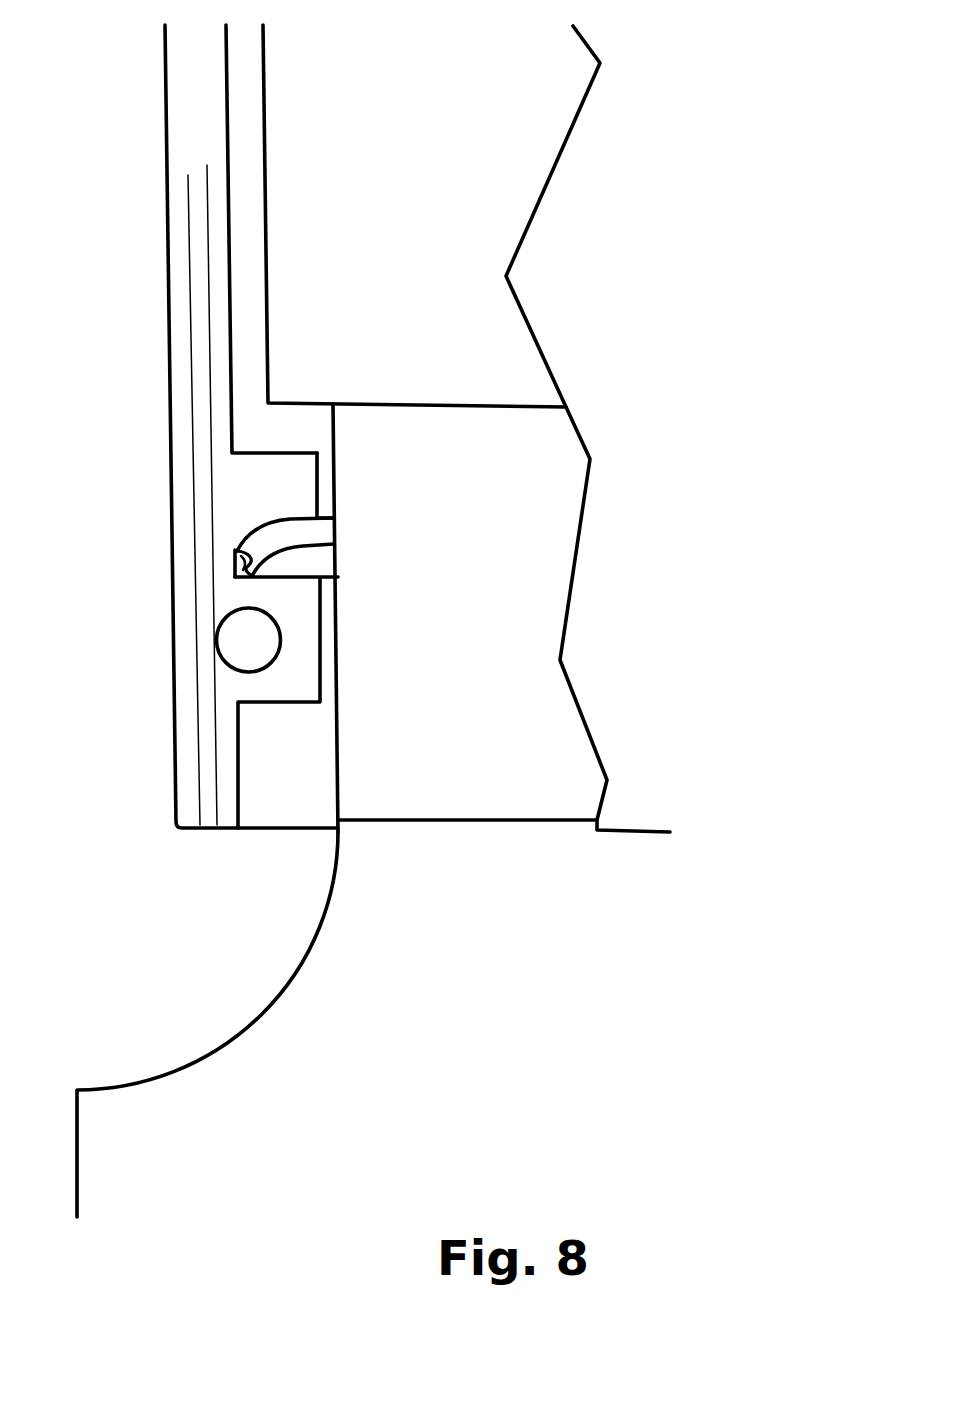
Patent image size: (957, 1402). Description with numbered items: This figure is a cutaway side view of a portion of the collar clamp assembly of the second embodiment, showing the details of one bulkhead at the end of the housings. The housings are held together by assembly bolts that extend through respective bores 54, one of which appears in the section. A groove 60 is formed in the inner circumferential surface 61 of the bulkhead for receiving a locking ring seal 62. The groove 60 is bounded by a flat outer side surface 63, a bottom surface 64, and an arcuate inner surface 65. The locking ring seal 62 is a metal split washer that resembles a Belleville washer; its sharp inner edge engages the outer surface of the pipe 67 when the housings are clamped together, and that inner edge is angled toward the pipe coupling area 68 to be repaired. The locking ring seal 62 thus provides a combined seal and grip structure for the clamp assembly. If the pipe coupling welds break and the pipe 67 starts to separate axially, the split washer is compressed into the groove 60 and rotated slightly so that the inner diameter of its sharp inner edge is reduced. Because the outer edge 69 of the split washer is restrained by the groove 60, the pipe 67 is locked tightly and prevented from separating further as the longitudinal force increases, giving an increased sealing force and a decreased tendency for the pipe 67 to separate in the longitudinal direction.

The bore 54 is at (237, 650).
The groove 60 is at (292, 568).
The inner circumferential surface 61 is at (313, 478).
The locking ring seal 62 is at (265, 543).
The flat outer side surface 63 is at (307, 578).
The bottom surface 64 is at (233, 562).
The arcuate inner surface 65 is at (273, 522).
The pipe 67 is at (375, 773).
The pipe coupling area 68 is at (293, 292).
The outer edge 69 is at (235, 552).